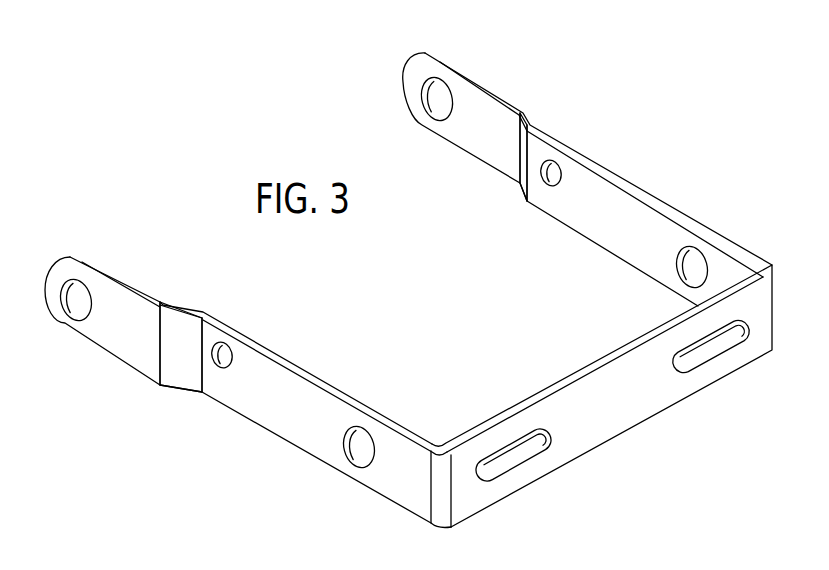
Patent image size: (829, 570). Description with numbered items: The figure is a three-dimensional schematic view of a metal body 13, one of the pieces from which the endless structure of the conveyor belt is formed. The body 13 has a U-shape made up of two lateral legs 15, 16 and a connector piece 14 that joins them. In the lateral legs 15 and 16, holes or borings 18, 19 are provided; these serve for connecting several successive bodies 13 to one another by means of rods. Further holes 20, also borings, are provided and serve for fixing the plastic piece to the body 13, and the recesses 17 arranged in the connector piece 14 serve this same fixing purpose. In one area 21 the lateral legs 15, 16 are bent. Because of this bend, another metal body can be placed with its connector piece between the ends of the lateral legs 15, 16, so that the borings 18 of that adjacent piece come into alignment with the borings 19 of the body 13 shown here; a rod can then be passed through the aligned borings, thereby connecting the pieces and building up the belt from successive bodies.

The metal body 13 is at (540, 62).
The connector piece 14 is at (618, 360).
The lateral leg 15 is at (630, 190).
The lateral leg 16 is at (282, 362).
The recess 17 is at (692, 367).
The hole 18 is at (680, 268).
The hole 19 is at (437, 113).
The hole 20 is at (543, 175).
The bent area 21 is at (550, 124).